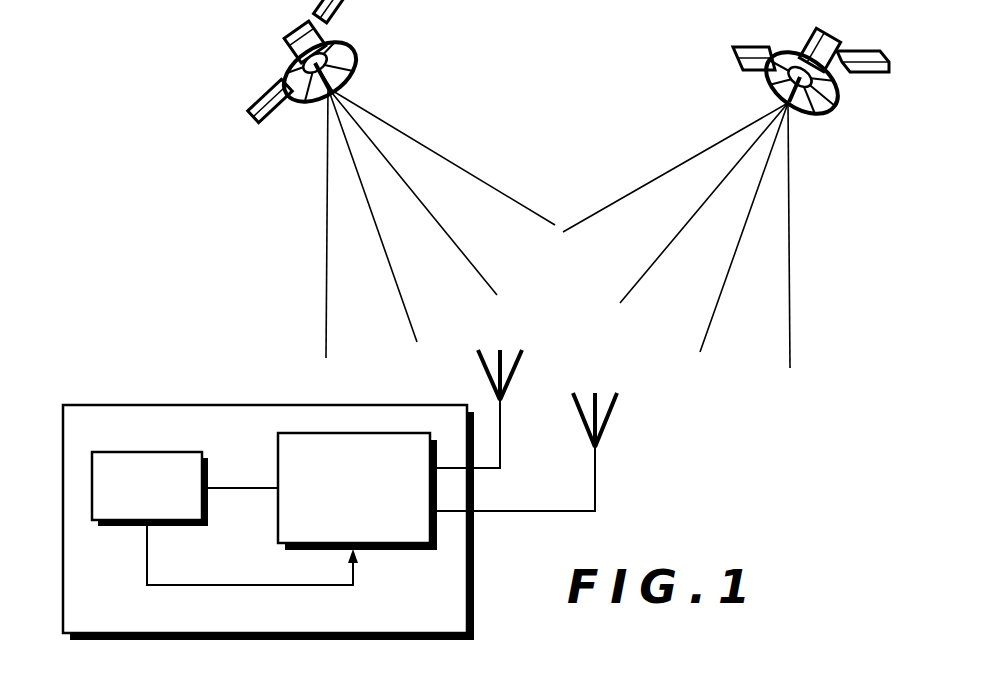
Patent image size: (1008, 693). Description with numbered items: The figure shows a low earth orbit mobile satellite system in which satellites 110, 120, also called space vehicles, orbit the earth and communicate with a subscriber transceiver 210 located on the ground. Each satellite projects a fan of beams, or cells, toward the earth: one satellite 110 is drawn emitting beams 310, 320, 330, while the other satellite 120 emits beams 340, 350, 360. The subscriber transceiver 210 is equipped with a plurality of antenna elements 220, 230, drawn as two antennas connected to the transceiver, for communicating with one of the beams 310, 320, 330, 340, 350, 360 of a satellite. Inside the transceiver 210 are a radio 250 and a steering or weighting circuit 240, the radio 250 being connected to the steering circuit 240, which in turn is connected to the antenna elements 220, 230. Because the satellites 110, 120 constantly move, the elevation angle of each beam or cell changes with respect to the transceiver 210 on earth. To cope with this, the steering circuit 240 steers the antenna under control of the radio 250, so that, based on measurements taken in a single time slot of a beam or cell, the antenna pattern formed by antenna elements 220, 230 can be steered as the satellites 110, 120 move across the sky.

The satellite 110 is at (808, 34).
The satellite 120 is at (288, 40).
The subscriber transceiver 210 is at (223, 403).
The antenna element 220 is at (503, 358).
The antenna element 230 is at (612, 405).
The steering circuit 240 is at (280, 528).
The radio 250 is at (105, 452).
The beam 310 is at (675, 182).
The beam 320 is at (704, 203).
The beam 330 is at (744, 227).
The beam 340 is at (441, 165).
The beam 350 is at (412, 191).
The beam 360 is at (372, 215).